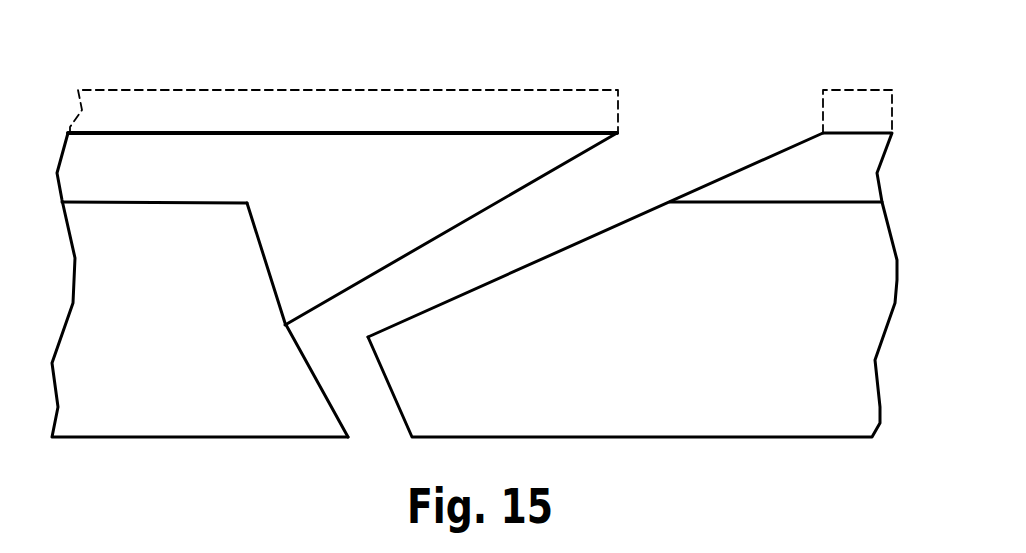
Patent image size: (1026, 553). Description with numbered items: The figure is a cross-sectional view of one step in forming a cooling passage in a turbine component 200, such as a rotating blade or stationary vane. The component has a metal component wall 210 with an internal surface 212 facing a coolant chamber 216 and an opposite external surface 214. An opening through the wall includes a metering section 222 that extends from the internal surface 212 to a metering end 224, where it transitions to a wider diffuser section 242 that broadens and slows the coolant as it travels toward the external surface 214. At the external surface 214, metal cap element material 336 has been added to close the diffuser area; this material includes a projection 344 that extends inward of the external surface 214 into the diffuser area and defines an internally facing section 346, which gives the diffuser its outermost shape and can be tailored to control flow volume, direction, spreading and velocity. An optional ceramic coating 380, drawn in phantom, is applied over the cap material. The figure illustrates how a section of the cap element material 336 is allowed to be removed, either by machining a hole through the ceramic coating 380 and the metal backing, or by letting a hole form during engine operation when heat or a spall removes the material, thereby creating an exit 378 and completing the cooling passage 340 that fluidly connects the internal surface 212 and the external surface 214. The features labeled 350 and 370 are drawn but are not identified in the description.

The turbine component 200 is at (106, 100).
The component wall 210 is at (838, 322).
The internal surface 212 is at (737, 438).
The external surface 214 is at (823, 202).
The coolant chamber 216 is at (639, 503).
The metering section 222 is at (347, 373).
The metering end 224 is at (330, 330).
The diffuser section 242 is at (568, 217).
The metal cap element material 336 is at (380, 180).
The cooling passage 340 is at (432, 325).
The projection 344 is at (318, 227).
The internally facing section 346 is at (430, 237).
The upper layer 350 is at (250, 145).
The removed corner region 370 is at (863, 117).
The exit 378 is at (612, 157).
The ceramic coating 380 is at (140, 122).